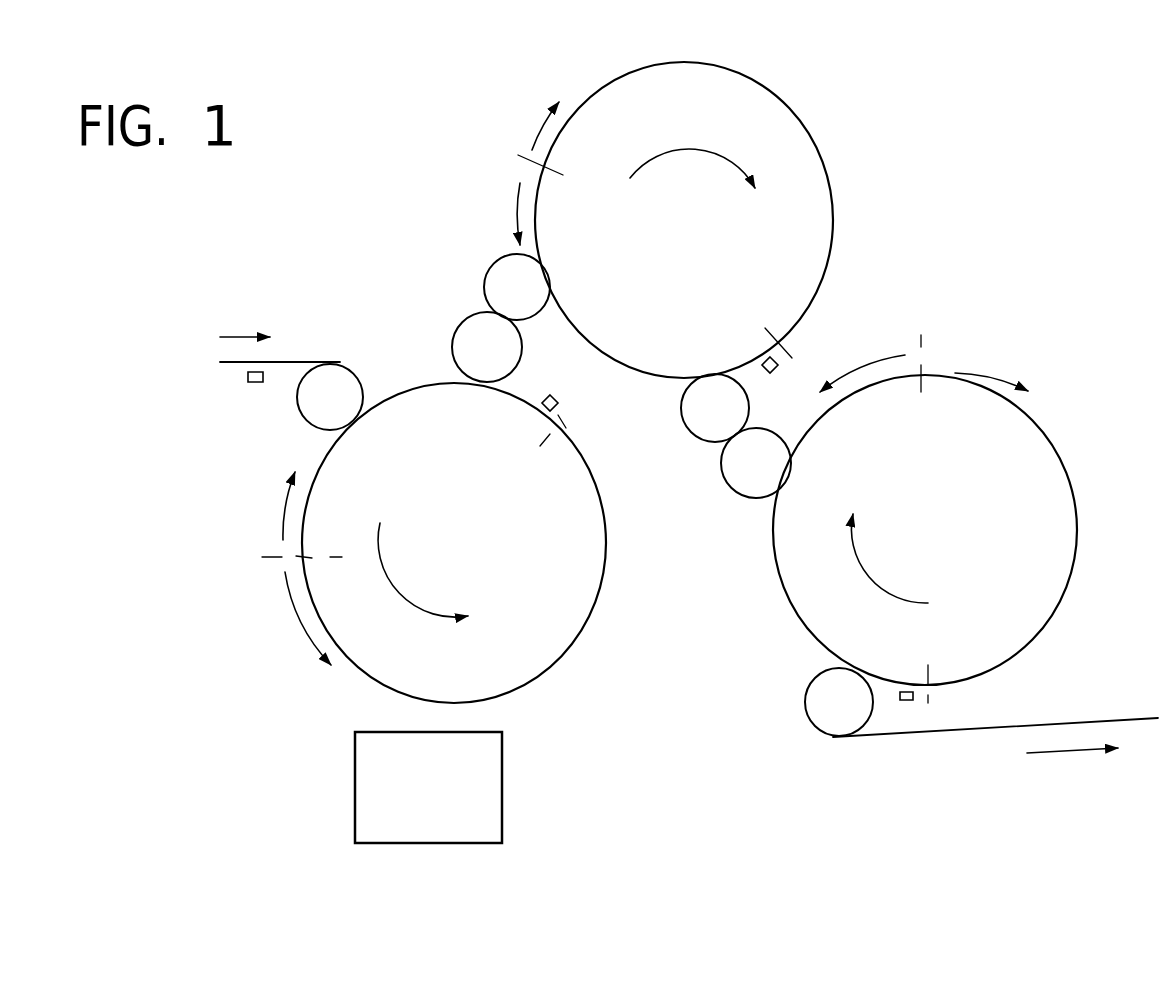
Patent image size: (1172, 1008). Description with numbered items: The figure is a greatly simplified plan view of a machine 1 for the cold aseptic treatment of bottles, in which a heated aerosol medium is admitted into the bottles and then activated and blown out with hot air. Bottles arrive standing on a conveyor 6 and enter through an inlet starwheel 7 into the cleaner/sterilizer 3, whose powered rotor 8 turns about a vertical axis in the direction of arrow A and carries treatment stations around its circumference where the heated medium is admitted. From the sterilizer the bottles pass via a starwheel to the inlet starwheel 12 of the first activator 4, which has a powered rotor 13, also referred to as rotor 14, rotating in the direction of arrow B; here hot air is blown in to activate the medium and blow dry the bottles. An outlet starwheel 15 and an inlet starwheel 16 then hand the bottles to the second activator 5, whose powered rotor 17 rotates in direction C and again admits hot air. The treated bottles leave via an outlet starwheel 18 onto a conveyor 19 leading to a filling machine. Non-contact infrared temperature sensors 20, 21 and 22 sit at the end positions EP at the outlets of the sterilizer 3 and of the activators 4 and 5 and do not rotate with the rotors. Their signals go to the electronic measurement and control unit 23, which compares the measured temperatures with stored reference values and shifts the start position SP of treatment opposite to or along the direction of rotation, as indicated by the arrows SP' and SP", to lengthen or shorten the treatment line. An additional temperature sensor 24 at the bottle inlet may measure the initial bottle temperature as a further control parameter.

The machine 1 is at (942, 176).
The cleaner/sterilizer 3 is at (572, 652).
The first activator 4 is at (837, 154).
The second activator 5 is at (1057, 421).
The conveyor 6 is at (283, 362).
The inlet starwheel 7 is at (340, 390).
The powered rotor 8 is at (583, 570).
The inlet starwheel of the first activator 12 is at (465, 340).
The powered rotor of the first activator 13 is at (528, 298).
The rotor of the first activator 14 is at (818, 215).
The outlet starwheel of the first activator 15 is at (703, 418).
The inlet starwheel of the second activator 16 is at (752, 477).
The powered rotor of the second activator 17 is at (1057, 500).
The outlet starwheel 18 is at (817, 703).
The conveyor 19 is at (1000, 730).
The temperature sensor 20 is at (556, 399).
The temperature sensor 21 is at (772, 373).
The temperature sensor 22 is at (905, 700).
The electronic measurement and control unit 23 is at (413, 809).
The additional temperature sensor 24 is at (250, 382).